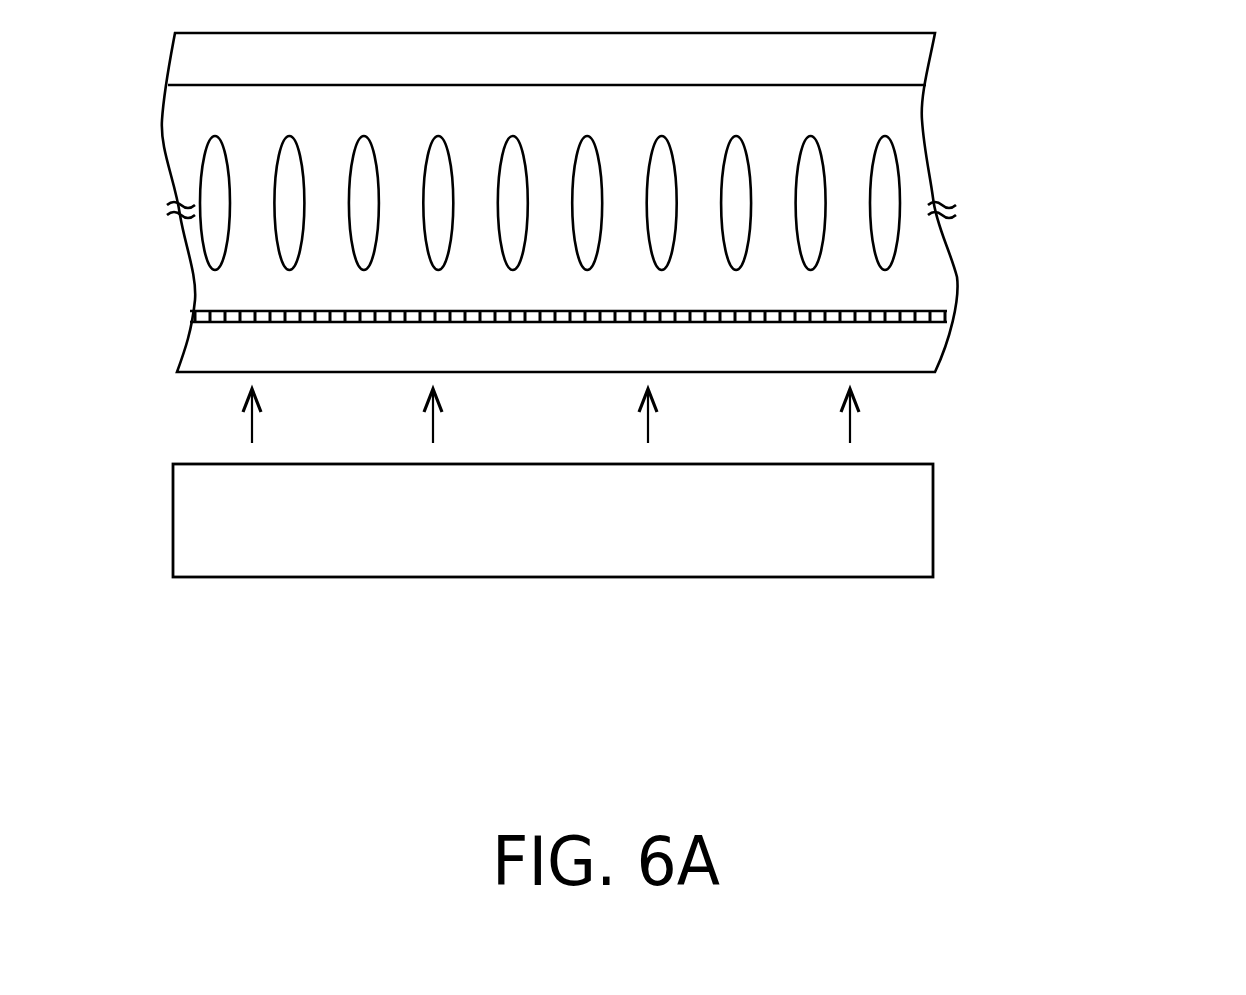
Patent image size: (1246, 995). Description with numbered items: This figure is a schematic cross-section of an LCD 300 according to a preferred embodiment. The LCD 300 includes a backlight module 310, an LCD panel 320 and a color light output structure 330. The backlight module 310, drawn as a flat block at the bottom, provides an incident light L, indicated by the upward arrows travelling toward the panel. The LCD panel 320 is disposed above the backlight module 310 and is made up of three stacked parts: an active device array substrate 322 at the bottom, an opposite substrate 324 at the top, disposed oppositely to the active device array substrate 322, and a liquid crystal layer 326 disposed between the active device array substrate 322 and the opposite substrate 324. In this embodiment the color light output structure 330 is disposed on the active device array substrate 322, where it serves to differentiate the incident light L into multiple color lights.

The LCD 300 is at (940, 652).
The backlight module 310 is at (915, 518).
The LCD panel 320 is at (1140, 47).
The active device array substrate 322 is at (927, 350).
The opposite substrate 324 is at (915, 60).
The liquid crystal layer 326 is at (918, 175).
The color light output structure 330 is at (190, 316).
The incident light L is at (250, 432).